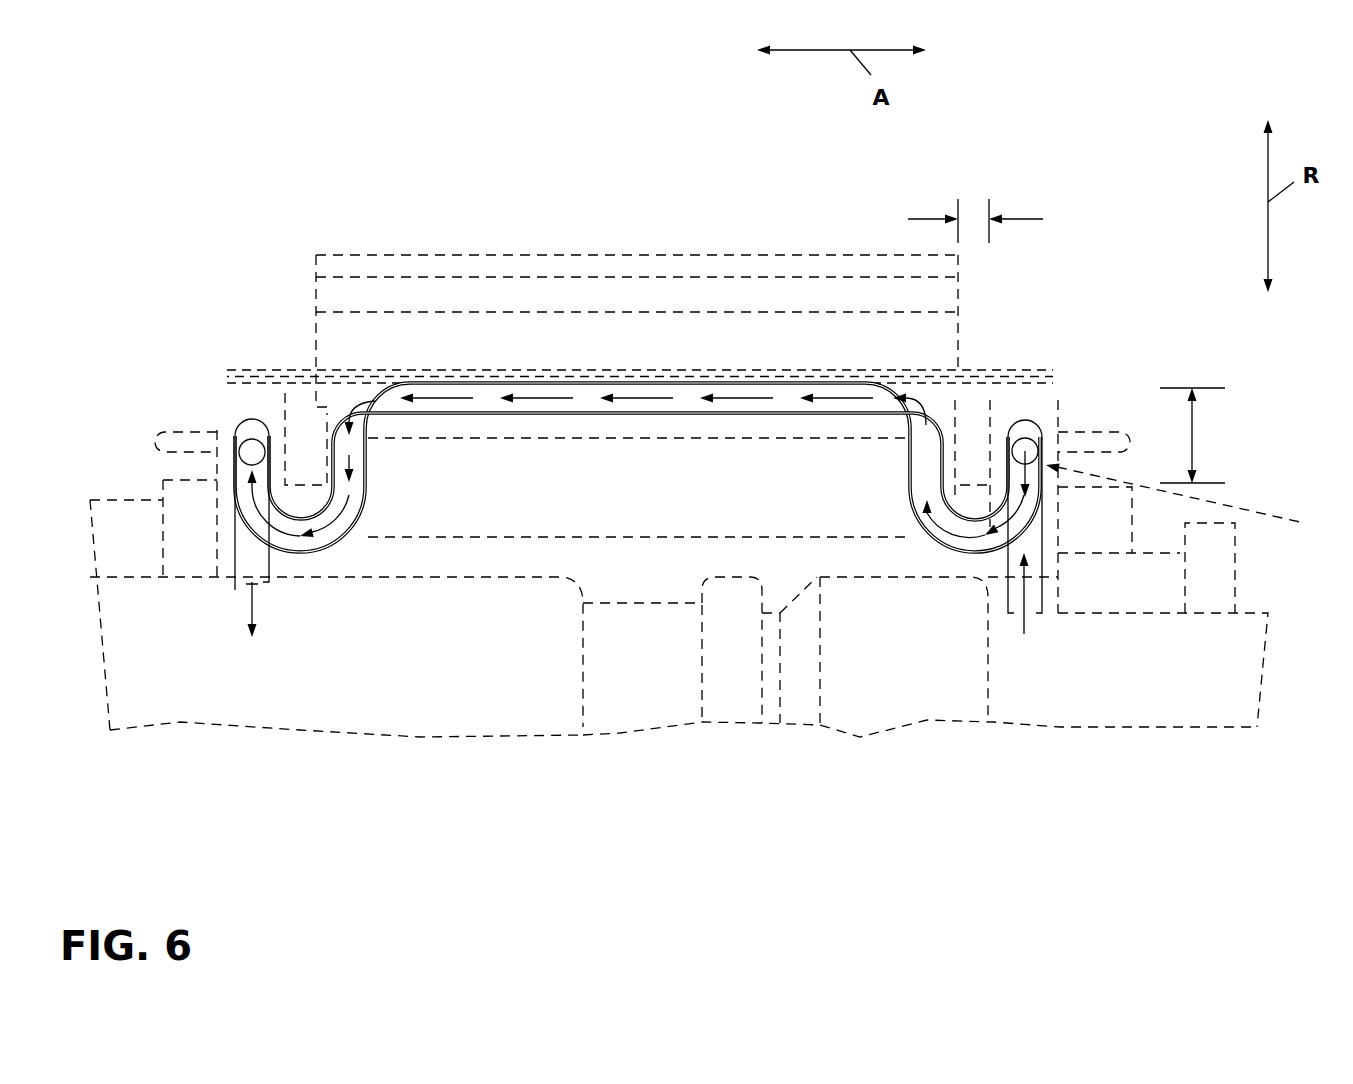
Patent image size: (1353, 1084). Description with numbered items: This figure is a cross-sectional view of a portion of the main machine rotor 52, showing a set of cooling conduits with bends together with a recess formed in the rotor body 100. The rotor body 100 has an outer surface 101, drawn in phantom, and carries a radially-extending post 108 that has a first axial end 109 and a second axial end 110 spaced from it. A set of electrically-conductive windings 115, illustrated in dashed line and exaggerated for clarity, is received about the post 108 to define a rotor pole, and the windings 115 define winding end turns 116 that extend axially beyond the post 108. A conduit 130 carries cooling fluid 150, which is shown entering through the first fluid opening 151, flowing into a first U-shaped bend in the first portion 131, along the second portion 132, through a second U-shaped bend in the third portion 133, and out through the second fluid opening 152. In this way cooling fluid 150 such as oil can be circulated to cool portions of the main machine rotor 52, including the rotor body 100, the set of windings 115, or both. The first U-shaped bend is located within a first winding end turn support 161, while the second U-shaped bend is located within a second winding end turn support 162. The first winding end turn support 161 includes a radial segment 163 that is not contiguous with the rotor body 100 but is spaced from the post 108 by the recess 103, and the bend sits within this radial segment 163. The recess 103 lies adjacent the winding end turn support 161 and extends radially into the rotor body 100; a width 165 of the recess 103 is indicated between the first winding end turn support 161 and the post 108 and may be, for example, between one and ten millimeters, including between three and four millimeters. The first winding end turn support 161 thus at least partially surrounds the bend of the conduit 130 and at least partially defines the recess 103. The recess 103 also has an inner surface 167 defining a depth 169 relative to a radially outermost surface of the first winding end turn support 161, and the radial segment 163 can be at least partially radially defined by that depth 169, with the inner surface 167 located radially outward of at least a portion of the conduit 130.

The rotor body 100 is at (640, 247).
The main machine rotor 52 is at (637, 177).
The outer surface 101 is at (430, 252).
The post 108 is at (754, 257).
The first axial end 109 is at (960, 298).
The second axial end 110 is at (317, 307).
The set of electrically-conductive windings 115 is at (380, 367).
The winding end turns 116 is at (233, 372).
The conduit 130 is at (583, 385).
The second portion 132 is at (777, 410).
The third portion 133 is at (250, 450).
The first portion 131 is at (1043, 487).
The cooling fluid 150 is at (640, 398).
The first fluid opening 151 is at (1013, 617).
The second fluid opening 152 is at (233, 580).
The first winding end turn support 161 is at (1196, 500).
The second winding end turn support 162 is at (218, 436).
The radial segment 163 is at (1063, 427).
The width 165 is at (1022, 218).
The inner surface 167 is at (973, 480).
The depth 169 is at (1195, 443).
The recess 103 is at (962, 422).